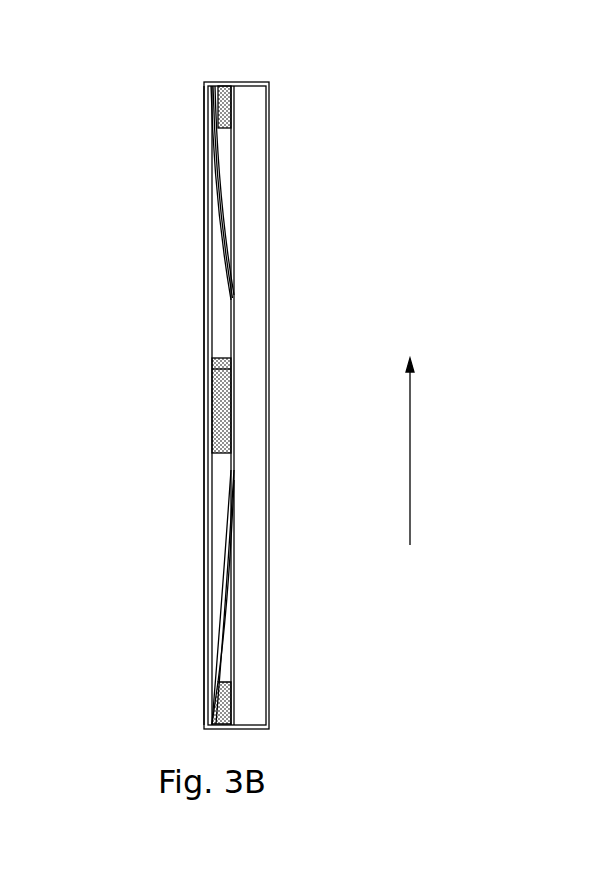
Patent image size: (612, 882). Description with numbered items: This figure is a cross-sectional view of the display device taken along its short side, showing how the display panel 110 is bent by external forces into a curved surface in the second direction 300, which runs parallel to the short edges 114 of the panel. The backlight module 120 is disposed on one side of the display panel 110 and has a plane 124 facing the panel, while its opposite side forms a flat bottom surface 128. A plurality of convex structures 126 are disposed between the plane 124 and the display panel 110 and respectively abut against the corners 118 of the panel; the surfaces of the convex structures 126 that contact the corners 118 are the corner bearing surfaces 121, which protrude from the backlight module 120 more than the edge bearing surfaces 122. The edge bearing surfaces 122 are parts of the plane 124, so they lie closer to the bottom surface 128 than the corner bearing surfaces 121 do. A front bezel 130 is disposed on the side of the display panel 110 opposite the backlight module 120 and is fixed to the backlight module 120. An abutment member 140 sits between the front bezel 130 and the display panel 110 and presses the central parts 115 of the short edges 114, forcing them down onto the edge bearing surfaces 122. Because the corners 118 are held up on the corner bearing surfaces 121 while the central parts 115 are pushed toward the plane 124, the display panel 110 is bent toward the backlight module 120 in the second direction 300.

The display panel 110 is at (222, 270).
The short edges 114 is at (218, 200).
The central parts of the short edges 115 is at (212, 368).
The corner 118 is at (219, 120).
The backlight module 120 is at (241, 120).
The corner bearing surfaces 121 is at (212, 97).
The edge bearing surfaces 122 is at (235, 245).
The plane 124 is at (235, 176).
The convex structures 126 is at (219, 86).
The bottom surface 128 is at (270, 503).
The front bezel 130 is at (204, 603).
The abutment member 140 is at (212, 418).
The second direction 300 is at (412, 458).